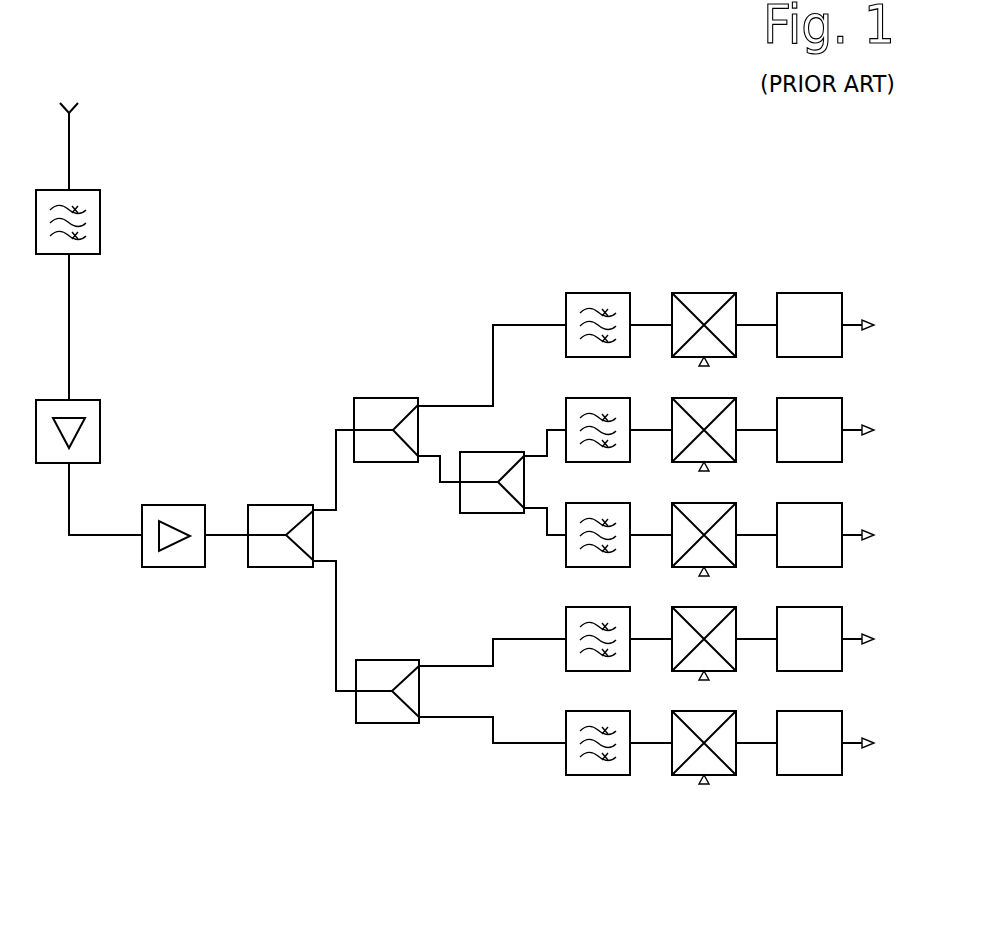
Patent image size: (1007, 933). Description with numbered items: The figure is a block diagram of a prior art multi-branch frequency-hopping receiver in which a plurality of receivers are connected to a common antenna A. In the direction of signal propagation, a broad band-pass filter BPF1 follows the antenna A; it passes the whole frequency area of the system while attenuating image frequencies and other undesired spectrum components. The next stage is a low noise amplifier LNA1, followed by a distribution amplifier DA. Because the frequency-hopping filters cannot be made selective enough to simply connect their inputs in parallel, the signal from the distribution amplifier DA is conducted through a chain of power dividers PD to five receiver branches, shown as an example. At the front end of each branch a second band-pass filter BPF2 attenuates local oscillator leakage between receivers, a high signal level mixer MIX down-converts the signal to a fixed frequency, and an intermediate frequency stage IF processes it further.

The antenna A is at (70, 134).
The band-pass filter BPF1 is at (100, 190).
The low noise amplifier LNA1 is at (100, 400).
The distribution amplifier DA is at (172, 505).
The power divider PD is at (279, 505).
The second band-pass filter BPF2 is at (598, 293).
The mixer MIX is at (702, 293).
The intermediate frequency stage IF is at (806, 293).